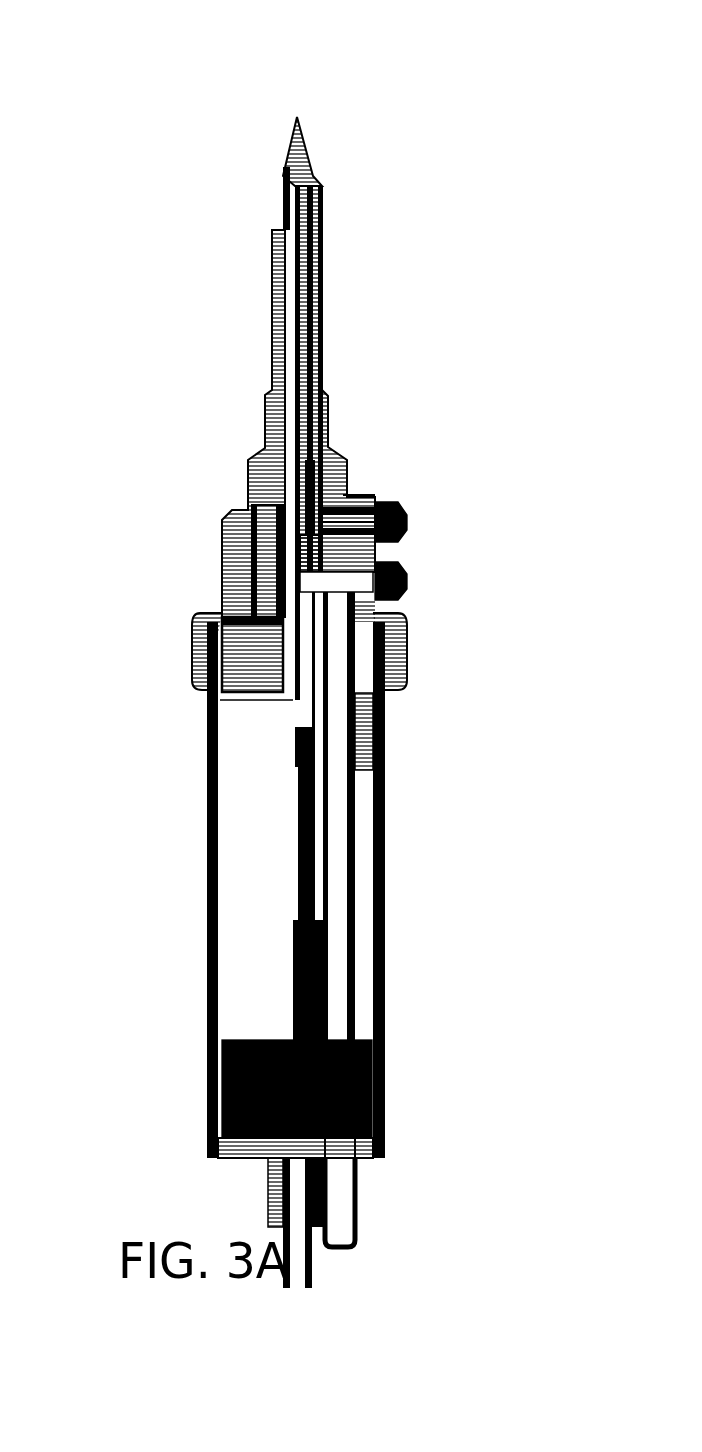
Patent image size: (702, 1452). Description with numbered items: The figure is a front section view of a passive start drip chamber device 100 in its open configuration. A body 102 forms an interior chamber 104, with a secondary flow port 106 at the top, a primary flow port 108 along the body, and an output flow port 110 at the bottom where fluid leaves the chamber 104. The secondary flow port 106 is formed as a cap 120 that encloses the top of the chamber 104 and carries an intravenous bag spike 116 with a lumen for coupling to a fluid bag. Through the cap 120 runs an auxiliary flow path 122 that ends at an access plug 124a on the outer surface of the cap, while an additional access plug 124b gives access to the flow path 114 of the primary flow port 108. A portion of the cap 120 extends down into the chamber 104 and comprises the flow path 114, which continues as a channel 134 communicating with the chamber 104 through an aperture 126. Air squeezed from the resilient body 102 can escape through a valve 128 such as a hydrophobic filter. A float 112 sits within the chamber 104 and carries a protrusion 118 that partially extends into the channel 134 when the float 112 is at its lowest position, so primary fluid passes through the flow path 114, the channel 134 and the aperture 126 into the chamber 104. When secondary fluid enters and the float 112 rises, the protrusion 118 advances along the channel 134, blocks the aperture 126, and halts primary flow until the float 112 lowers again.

The passive start drip chamber device 100 is at (529, 86).
The body 102 is at (212, 805).
The chamber 104 is at (238, 912).
The secondary flow port 106 is at (293, 84).
The primary flow port 108 is at (334, 1264).
The output flow port 110 is at (297, 1302).
The float 112 is at (372, 1090).
The flow path 114 is at (307, 587).
The intravenous bag spike 116 is at (277, 275).
The protrusion 118 is at (313, 843).
The cap 120 is at (222, 585).
The auxiliary flow path 122 is at (310, 345).
The access plug 124a is at (388, 512).
The additional access plug 124b is at (400, 595).
The aperture 126 is at (282, 715).
The valve 128 is at (246, 596).
The channel 134 is at (335, 735).